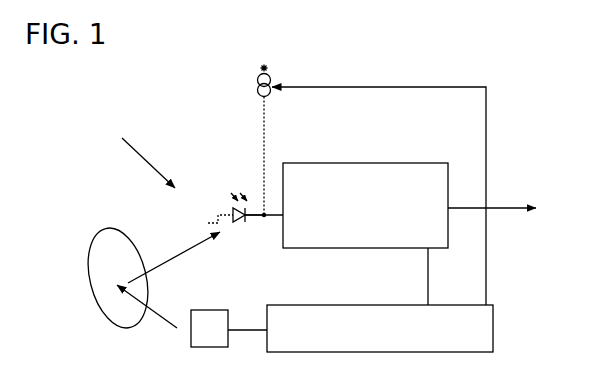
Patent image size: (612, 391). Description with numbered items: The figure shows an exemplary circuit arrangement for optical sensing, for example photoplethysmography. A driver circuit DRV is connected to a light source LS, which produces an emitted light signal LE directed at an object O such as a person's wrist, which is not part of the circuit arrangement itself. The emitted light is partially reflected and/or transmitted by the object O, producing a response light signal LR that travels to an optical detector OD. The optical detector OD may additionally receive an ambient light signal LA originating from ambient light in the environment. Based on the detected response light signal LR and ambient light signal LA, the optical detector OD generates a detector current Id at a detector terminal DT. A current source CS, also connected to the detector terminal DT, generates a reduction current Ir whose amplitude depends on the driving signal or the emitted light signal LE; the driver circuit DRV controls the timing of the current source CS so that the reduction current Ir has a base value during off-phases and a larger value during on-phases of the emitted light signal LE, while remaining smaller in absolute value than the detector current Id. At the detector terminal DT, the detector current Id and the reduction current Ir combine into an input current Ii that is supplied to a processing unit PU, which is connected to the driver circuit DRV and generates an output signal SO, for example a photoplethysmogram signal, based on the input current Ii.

The processing unit PU is at (365, 205).
The driver circuit DRV is at (380, 300).
The light source LS is at (229, 328).
The output signal SO is at (492, 196).
The current source CS is at (359, 185).
The reduction current Ir is at (254, 156).
The input current Ii is at (264, 207).
The optical detector OD is at (224, 208).
The detector current Id is at (254, 226).
The detector terminal DT is at (267, 217).
The ambient light signal LA is at (148, 161).
The object O is at (117, 278).
The response light signal LR is at (174, 257).
The emitted light signal LE is at (147, 316).